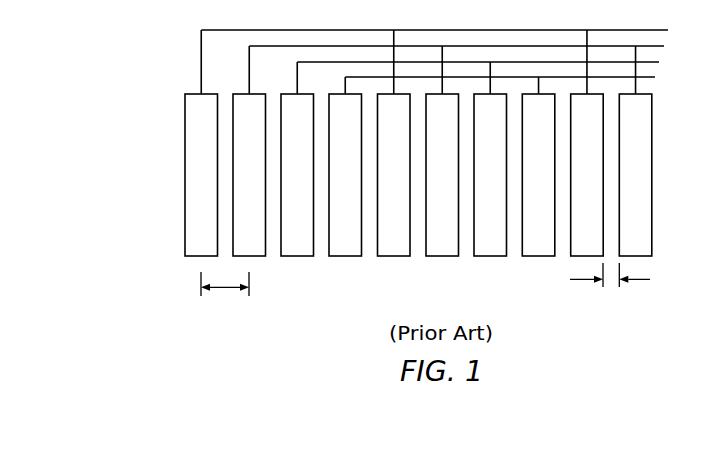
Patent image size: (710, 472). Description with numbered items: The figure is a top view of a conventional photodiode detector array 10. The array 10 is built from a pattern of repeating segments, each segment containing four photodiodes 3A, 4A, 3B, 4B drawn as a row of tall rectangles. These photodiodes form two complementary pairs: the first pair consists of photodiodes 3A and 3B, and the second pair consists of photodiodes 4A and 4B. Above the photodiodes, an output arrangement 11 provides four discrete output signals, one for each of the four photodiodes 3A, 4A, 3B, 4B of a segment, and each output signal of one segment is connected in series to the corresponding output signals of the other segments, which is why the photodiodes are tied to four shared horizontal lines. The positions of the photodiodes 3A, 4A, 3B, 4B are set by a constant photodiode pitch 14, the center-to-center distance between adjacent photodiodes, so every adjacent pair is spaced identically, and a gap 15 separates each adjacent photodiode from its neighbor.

The photodiode detector array 10 is at (363, 175).
The output arrangement 11 is at (167, 59).
The photodiode pitch 14 is at (218, 298).
The gap 15 is at (618, 293).
The photodiode 3A is at (190, 134).
The photodiode 4A is at (238, 168).
The photodiode 3B is at (286, 199).
The photodiode 4B is at (334, 232).